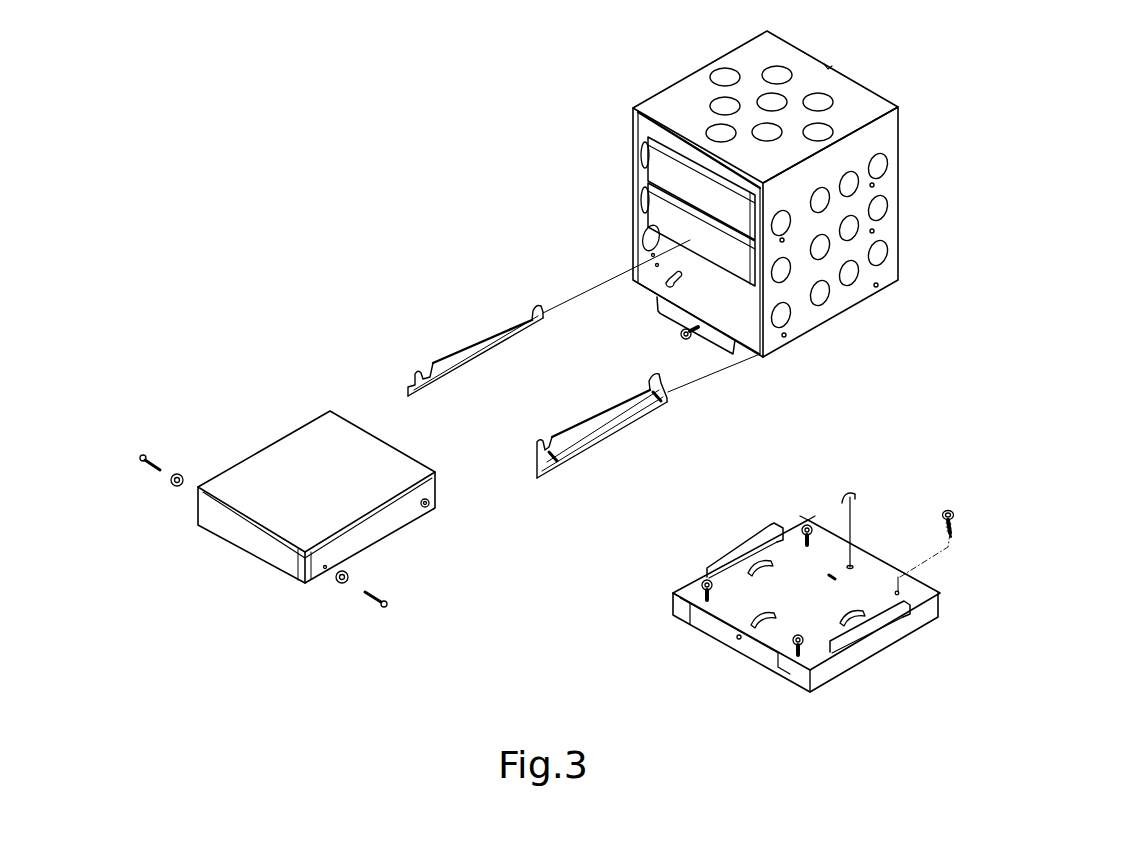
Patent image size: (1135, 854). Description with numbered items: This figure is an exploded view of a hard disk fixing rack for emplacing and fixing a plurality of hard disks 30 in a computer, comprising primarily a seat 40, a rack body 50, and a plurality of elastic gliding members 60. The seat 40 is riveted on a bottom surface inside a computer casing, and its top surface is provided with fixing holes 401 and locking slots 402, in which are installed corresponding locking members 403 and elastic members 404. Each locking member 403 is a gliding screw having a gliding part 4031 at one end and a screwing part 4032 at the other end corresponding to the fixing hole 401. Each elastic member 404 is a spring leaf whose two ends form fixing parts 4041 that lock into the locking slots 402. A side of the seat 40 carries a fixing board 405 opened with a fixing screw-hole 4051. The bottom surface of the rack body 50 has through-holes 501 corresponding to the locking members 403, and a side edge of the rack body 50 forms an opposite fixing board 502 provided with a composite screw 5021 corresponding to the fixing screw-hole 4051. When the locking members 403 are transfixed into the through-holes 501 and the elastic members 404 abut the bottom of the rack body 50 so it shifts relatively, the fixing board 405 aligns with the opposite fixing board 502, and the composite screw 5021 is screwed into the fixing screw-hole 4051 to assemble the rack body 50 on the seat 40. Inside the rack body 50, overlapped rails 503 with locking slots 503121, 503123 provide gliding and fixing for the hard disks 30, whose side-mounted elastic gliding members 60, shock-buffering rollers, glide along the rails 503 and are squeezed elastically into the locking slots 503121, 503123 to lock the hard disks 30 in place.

The hard disk 30 is at (665, 205).
The seat 40 is at (862, 548).
The rack body 50 is at (855, 100).
The elastic gliding member 60 is at (342, 583).
The fixing hole 401 is at (903, 575).
The locking slot 402 is at (870, 558).
The locking member 403 is at (998, 523).
The elastic member 404 is at (848, 492).
The fixing board 405 is at (763, 652).
The through-hole 501 is at (670, 279).
The opposite fixing board 502 is at (720, 343).
The rail 503 is at (530, 460).
The gliding part 4031 is at (955, 510).
The screwing part 4032 is at (953, 534).
The fixing part 4041 is at (805, 515).
The fixing screw-hole 4051 is at (738, 638).
The composite screw 5021 is at (680, 333).
The locking slot 503121 is at (557, 462).
The locking slot 503123 is at (665, 403).